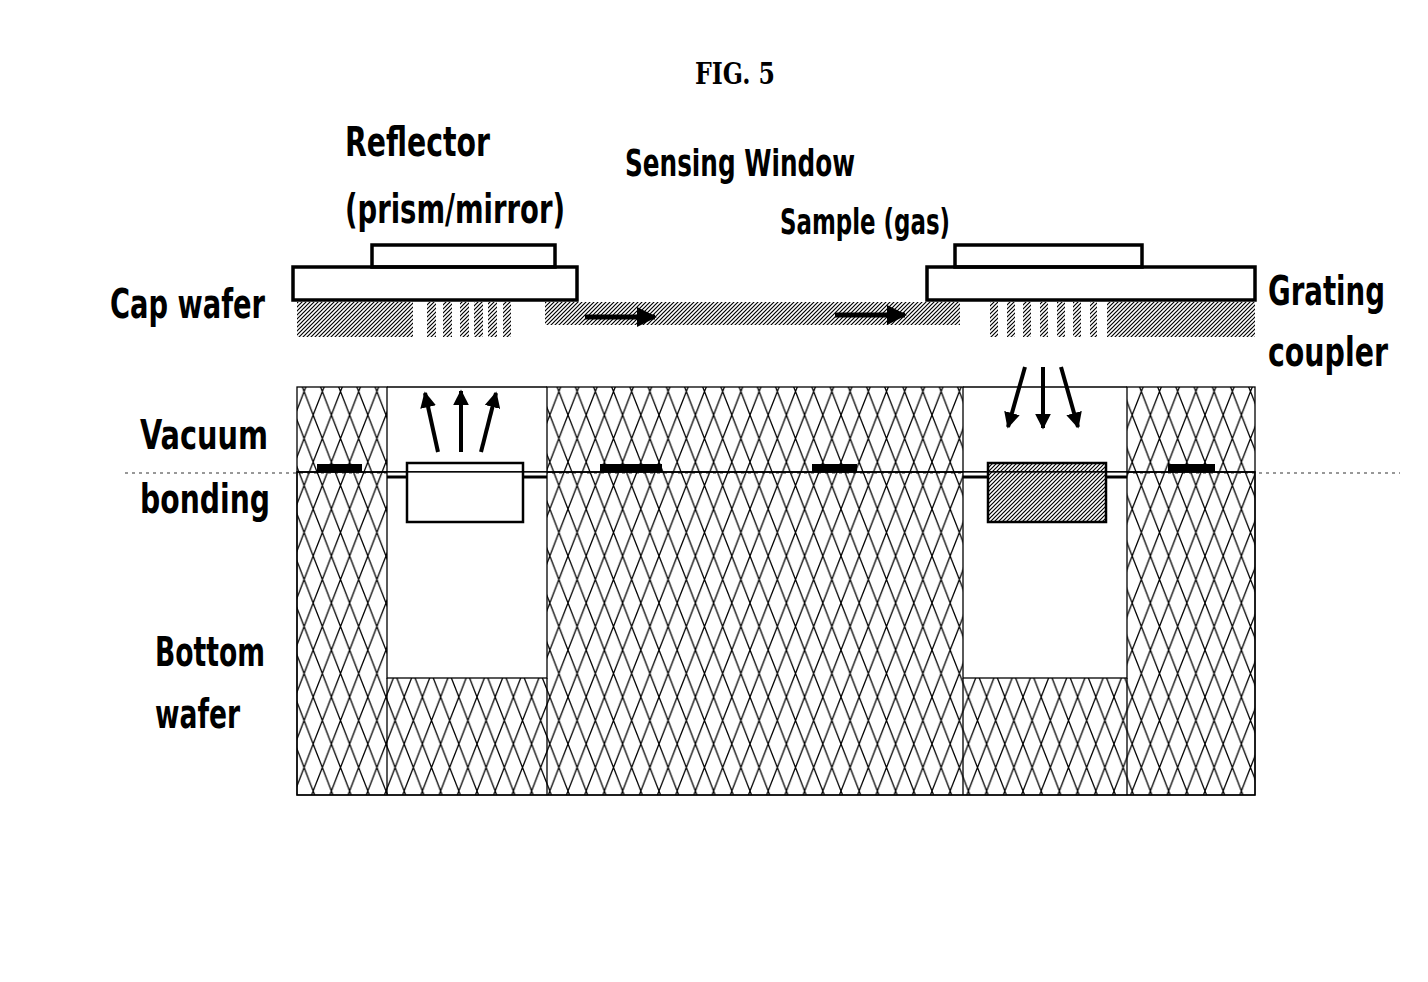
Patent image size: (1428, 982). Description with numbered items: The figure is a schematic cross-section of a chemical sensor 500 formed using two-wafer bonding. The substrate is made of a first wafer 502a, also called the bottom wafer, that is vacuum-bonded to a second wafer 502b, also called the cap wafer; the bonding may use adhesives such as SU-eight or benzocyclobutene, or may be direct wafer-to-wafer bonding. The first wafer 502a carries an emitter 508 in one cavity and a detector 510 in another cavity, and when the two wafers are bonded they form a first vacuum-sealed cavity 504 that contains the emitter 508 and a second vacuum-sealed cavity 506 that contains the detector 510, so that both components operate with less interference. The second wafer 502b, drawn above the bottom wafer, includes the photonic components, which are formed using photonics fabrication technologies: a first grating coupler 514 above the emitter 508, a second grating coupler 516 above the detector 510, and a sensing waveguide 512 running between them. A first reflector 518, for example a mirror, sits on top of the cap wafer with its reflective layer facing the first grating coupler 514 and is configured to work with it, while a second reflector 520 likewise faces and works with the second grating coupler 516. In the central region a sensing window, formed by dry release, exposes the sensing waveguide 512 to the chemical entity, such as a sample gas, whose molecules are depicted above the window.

The chemical sensor 500 is at (1271, 719).
The first wafer 502a is at (872, 719).
The second wafer 502b is at (1180, 426).
The first vacuum-sealed cavity 504 is at (410, 640).
The second vacuum-sealed cavity 506 is at (1083, 647).
The emitter 508 is at (478, 480).
The detector 510 is at (1060, 496).
The sensing waveguide 512 is at (600, 300).
The first grating coupler 514 is at (460, 318).
The second grating coupler 516 is at (1110, 297).
The first reflector 518 is at (390, 255).
The second reflector 520 is at (1015, 250).